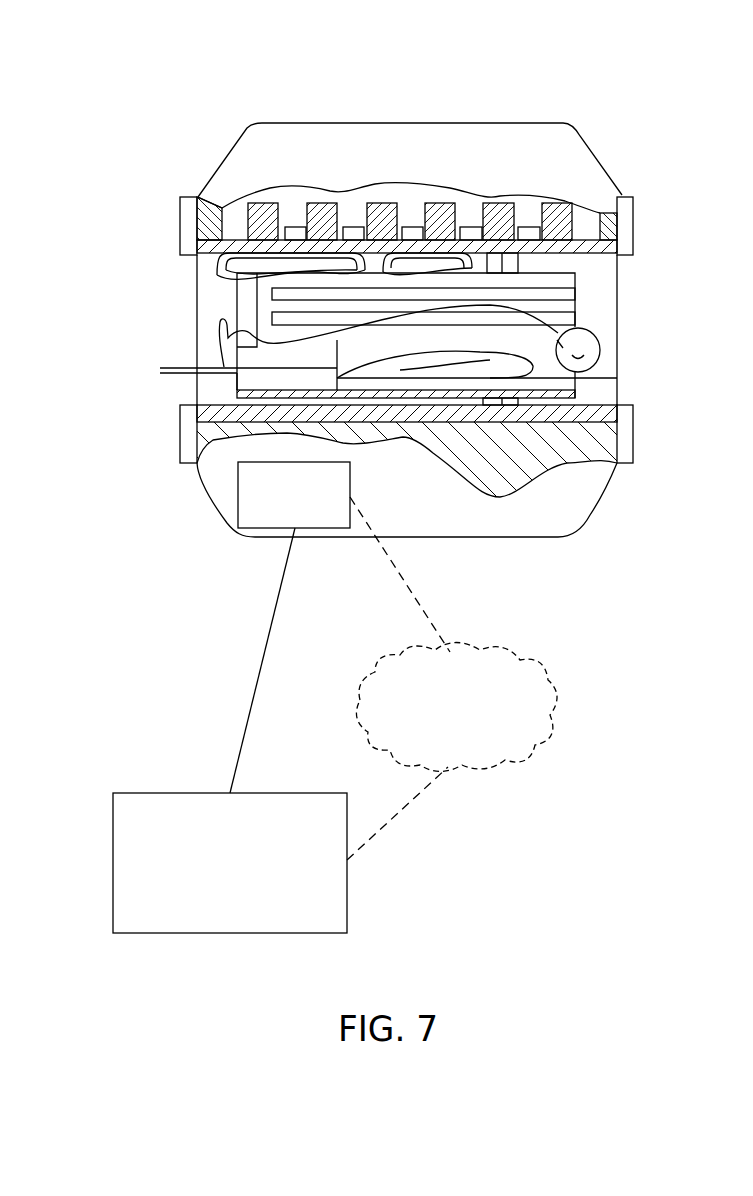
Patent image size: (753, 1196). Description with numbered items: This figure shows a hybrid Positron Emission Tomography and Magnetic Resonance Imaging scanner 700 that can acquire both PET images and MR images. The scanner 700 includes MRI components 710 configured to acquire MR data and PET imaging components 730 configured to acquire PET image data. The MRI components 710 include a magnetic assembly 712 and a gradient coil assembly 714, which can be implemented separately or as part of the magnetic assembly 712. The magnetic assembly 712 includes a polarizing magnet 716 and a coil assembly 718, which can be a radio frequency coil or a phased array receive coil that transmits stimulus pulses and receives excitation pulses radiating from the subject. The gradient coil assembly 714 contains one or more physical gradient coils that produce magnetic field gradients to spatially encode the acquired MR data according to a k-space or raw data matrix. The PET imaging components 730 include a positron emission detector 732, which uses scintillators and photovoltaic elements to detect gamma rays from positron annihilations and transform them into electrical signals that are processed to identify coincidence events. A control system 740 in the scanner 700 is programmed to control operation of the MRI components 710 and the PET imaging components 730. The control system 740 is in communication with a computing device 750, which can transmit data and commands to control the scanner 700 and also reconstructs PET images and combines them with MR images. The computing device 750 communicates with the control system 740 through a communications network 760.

The scanner 700 is at (200, 52).
The MRI components 710 is at (330, 167).
The magnetic assembly 712 is at (205, 167).
The gradient coil assembly 714 is at (212, 248).
The polarizing magnet 716 is at (279, 202).
The coil assembly 718 is at (565, 287).
The PET imaging components 730 is at (518, 265).
The positron emission detector 732 is at (556, 318).
The control system 740 is at (238, 497).
The computing device 750 is at (112, 860).
The communications network 760 is at (557, 707).